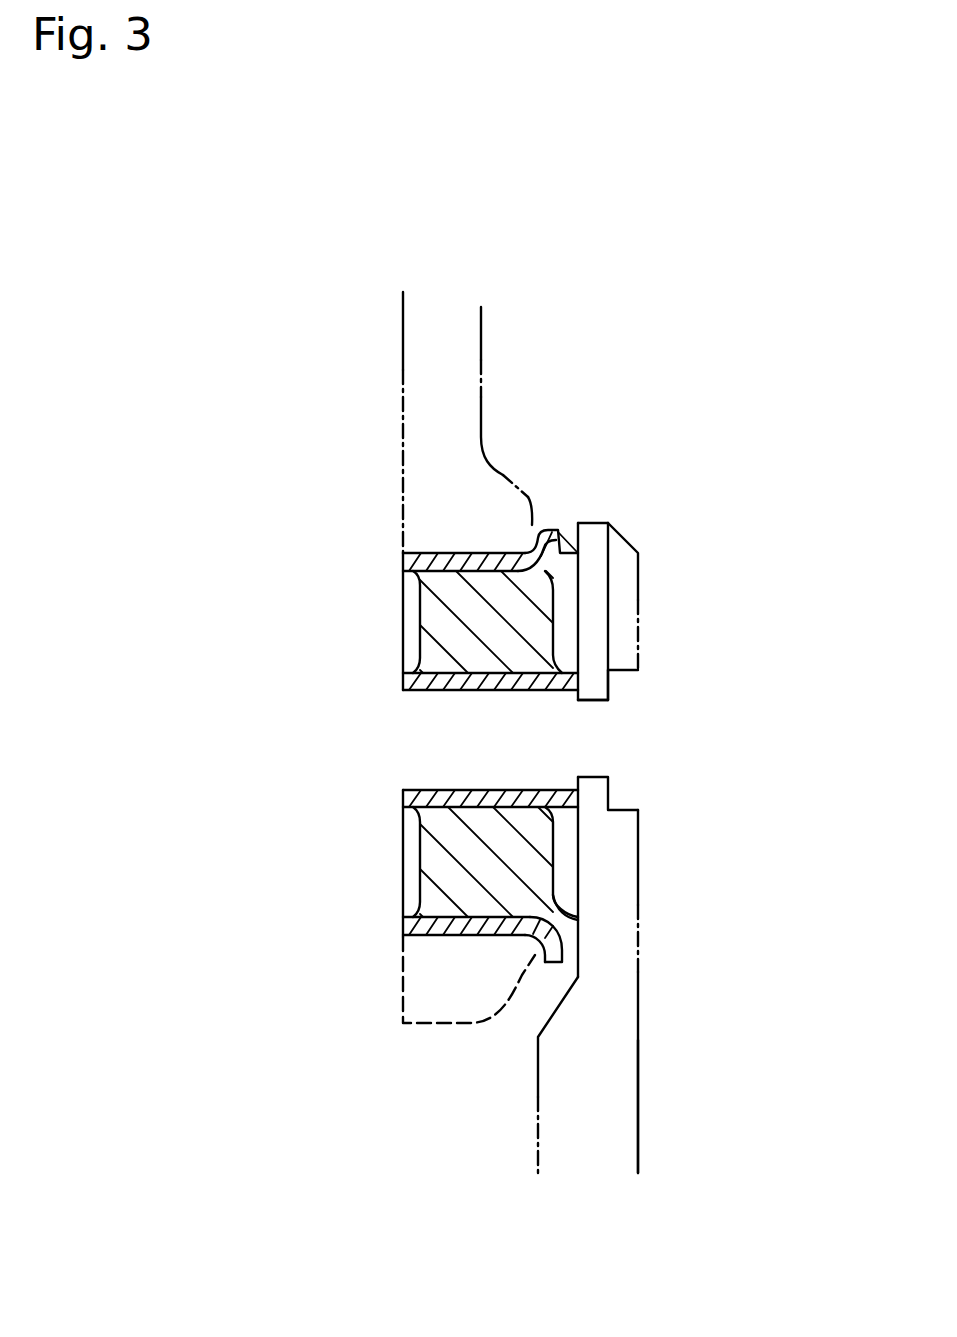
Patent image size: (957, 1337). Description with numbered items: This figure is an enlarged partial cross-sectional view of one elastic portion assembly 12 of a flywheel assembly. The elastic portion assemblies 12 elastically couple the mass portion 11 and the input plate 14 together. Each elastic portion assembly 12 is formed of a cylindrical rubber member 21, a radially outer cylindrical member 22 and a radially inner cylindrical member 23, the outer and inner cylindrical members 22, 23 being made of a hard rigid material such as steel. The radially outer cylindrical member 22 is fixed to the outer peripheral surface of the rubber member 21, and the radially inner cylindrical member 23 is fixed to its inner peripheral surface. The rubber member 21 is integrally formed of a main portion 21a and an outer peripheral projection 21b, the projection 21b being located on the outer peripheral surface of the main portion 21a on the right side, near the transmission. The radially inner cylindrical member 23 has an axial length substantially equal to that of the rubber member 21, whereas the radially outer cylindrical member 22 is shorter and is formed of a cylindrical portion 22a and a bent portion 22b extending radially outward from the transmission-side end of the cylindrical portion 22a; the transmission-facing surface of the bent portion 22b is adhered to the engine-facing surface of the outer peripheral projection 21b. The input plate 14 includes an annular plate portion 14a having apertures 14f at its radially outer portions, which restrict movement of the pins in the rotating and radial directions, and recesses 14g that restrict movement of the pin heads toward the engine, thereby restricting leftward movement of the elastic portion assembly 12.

The mass portion 11 is at (486, 330).
The elastic portion assembly 12 is at (484, 657).
The input plate 14 is at (593, 848).
The annular plate portion 14a is at (615, 1068).
The aperture 14f is at (590, 700).
The recess 14g is at (622, 670).
The cylindrical rubber member 21 is at (533, 767).
The main portion 21a is at (527, 862).
The outer peripheral projection 21b is at (568, 934).
The radially outer cylindrical member 22 is at (387, 672).
The cylindrical portion 22a is at (455, 555).
The bent portion 22b is at (531, 525).
The radially inner cylindrical member 23 is at (463, 682).